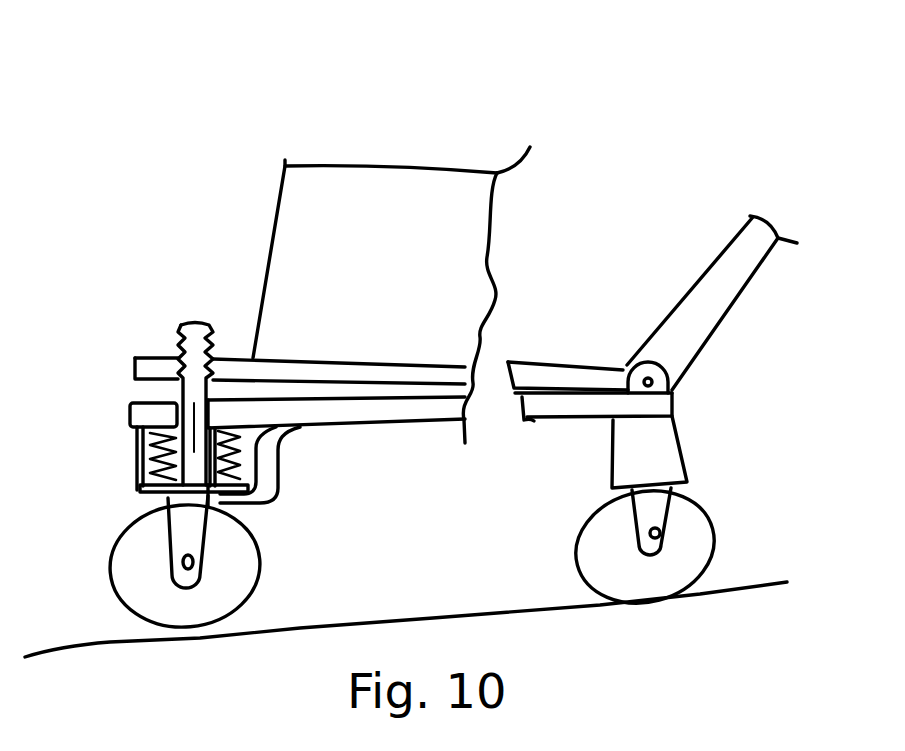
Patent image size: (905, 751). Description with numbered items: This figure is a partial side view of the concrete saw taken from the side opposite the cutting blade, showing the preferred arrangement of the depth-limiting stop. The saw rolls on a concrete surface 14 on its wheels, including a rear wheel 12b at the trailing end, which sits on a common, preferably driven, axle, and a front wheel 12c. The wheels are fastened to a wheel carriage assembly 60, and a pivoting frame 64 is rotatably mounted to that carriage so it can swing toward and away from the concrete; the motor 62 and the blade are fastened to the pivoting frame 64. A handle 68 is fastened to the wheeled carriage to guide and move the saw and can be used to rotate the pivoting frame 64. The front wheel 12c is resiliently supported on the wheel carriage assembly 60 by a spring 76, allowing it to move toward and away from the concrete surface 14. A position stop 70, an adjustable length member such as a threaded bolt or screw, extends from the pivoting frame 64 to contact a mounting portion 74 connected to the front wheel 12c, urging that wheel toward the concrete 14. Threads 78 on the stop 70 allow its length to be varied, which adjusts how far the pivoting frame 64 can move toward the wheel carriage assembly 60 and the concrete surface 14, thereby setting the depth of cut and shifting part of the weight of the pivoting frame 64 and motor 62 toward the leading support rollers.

The rear wheel 12b is at (708, 532).
The front wheel 12c is at (253, 567).
The concrete surface 14 is at (433, 618).
The wheel carriage assembly 60 is at (338, 418).
The motor 62 is at (377, 193).
The pivoting frame 64 is at (357, 360).
The handle 68 is at (738, 295).
The position stop 70 is at (180, 393).
The mounting portion 74 is at (147, 490).
The spring 76 is at (158, 453).
The threads 78 is at (180, 332).